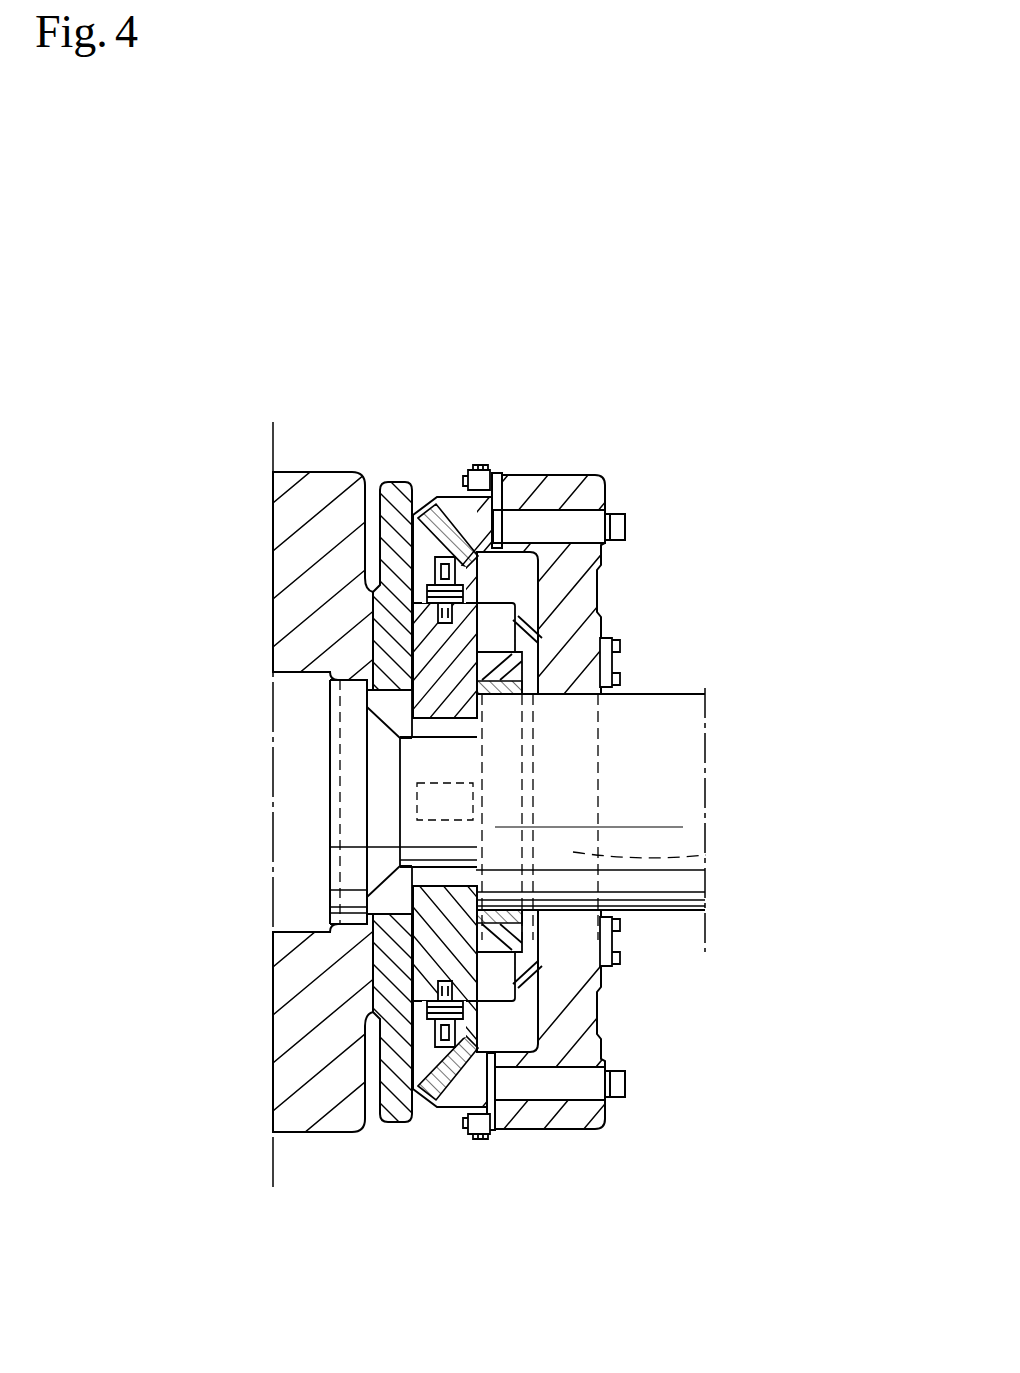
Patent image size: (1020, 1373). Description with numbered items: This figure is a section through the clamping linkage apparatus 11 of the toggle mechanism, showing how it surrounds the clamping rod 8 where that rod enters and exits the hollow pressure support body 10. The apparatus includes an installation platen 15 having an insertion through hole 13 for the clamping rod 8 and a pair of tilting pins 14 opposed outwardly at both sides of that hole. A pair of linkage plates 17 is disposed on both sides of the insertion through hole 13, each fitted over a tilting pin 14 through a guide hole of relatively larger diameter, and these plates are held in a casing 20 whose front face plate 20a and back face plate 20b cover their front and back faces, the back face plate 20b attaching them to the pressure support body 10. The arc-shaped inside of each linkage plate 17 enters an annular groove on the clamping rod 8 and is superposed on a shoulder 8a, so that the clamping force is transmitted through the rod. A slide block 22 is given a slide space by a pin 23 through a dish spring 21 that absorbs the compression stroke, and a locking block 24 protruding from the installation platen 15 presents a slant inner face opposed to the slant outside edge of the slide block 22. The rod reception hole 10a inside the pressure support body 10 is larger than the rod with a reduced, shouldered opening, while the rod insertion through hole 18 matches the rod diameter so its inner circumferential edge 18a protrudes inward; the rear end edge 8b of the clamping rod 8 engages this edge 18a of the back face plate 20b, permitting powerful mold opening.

The clamping rod 8 is at (665, 787).
The shoulder 8a is at (483, 733).
The rear end edge 8b is at (333, 833).
The pressure support body 10 is at (315, 487).
The rod reception hole 10a is at (287, 682).
The clamping linkage apparatus 11 is at (605, 477).
The insertion through hole 13 is at (706, 855).
The tilting pins 14 is at (490, 585).
The installation platen 15 is at (573, 657).
The linkage plates 17 is at (438, 652).
The rod insertion through hole 18 is at (392, 710).
The inner circumferential edge 18a is at (383, 687).
The casing 20 is at (378, 1122).
The front face plate 20a is at (507, 940).
The back face plate 20b is at (397, 490).
The dish spring 21 is at (433, 1010).
The slide block 22 is at (430, 555).
The pin 23 is at (440, 985).
The locking block 24 is at (512, 472).